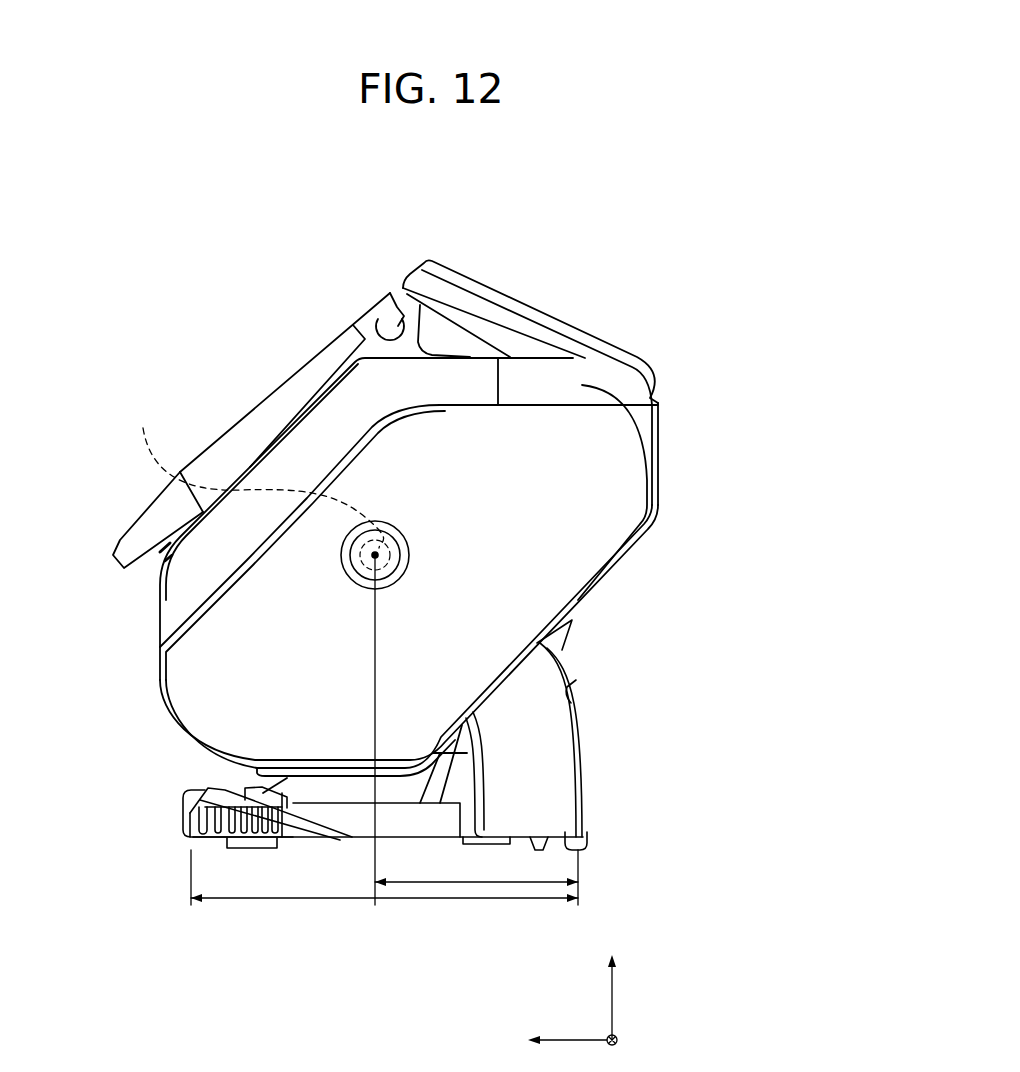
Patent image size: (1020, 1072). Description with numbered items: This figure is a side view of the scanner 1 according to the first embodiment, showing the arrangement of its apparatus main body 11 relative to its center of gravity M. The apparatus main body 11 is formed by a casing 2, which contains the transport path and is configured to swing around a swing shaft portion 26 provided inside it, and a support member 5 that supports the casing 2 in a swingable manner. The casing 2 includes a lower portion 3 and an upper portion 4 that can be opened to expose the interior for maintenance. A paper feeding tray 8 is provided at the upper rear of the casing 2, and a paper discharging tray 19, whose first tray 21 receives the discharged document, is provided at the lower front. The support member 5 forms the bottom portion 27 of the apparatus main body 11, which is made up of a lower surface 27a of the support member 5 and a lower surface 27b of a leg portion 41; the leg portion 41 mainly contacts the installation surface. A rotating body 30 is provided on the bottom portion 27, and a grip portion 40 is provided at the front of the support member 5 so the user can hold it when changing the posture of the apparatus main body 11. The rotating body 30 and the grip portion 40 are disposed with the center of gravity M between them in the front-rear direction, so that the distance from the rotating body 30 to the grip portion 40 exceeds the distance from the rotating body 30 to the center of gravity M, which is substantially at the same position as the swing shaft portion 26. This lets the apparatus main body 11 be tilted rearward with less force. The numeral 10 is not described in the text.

The scanner 1 is at (195, 270).
The printer main body 10 is at (438, 621).
The casing 2 is at (708, 562).
The lower portion 3 is at (653, 532).
The upper portion 4 is at (587, 542).
The support member 5 is at (540, 703).
The paper feeding tray 8 is at (523, 303).
The apparatus main body 11 is at (745, 587).
The paper discharging tray 19 is at (233, 410).
The first tray 21 is at (303, 367).
The swing shaft portion 26 is at (254, 472).
The bottom portion 27 is at (703, 706).
The lower surface of the support member 27a is at (483, 831).
The lower surface of the leg portion 27b is at (490, 838).
The rotating body 30 is at (590, 845).
The grip portion 40 is at (190, 797).
The leg portion 41 is at (210, 790).
The center of gravity M is at (375, 553).